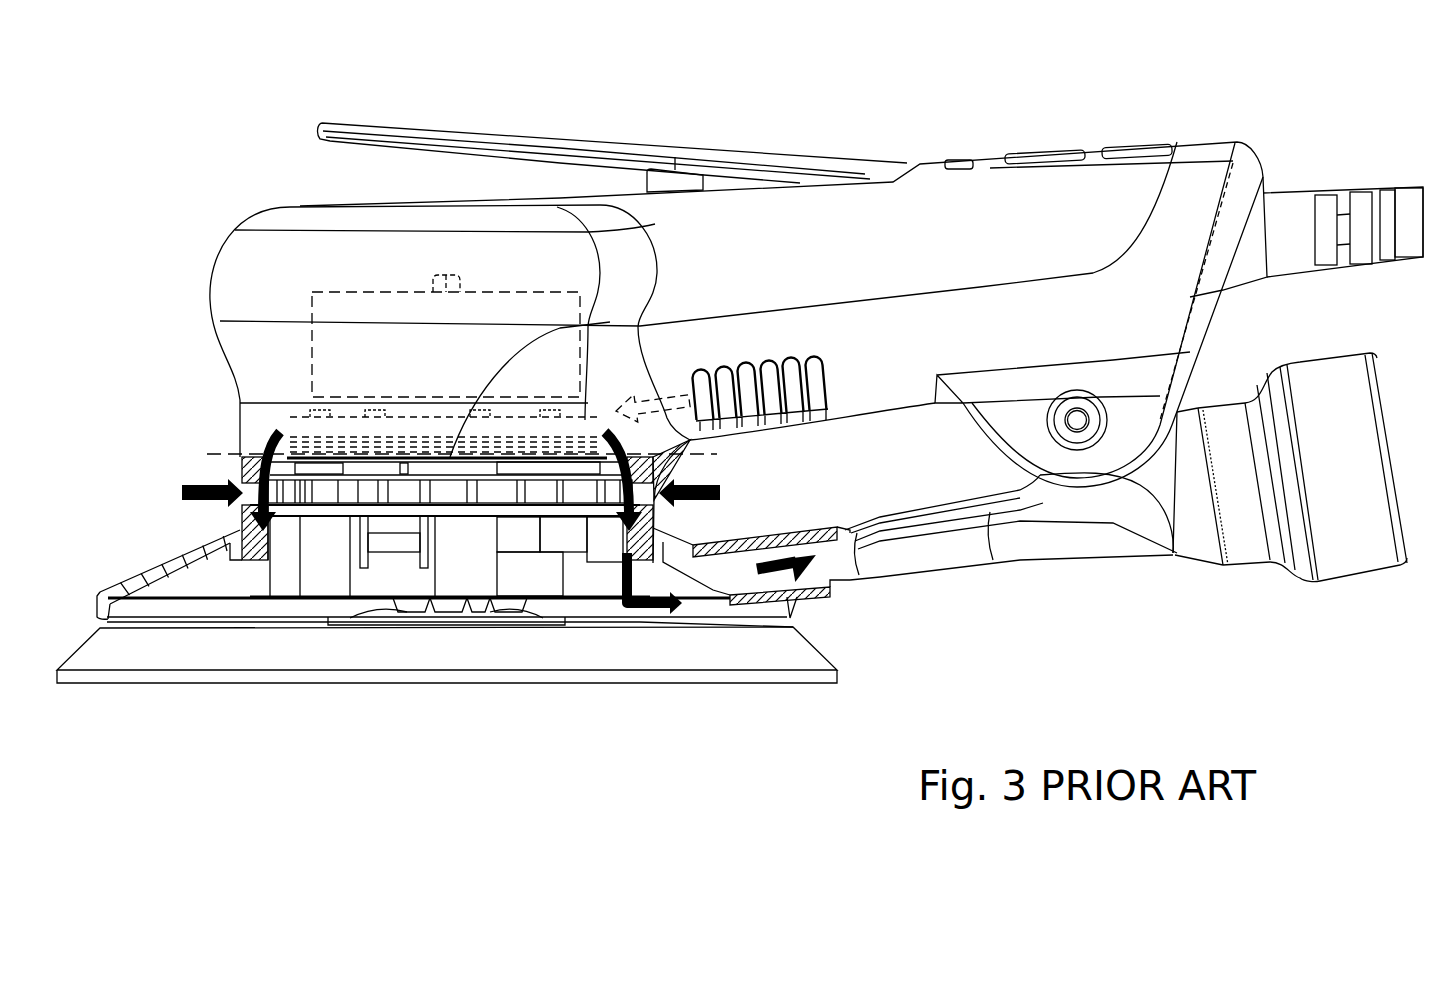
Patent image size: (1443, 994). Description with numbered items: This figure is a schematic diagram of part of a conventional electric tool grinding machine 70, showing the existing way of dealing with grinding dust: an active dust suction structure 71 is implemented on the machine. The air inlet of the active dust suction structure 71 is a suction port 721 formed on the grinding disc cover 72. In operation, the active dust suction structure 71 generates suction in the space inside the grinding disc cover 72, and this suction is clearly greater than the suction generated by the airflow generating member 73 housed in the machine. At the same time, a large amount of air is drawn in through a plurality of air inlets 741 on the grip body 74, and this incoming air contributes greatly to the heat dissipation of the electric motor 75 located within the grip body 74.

The electric tool grinding machine 70 is at (915, 69).
The active dust suction structure 71 is at (927, 557).
The grinding disc cover 72 is at (153, 565).
The suction port 721 is at (713, 584).
The airflow generating member 73 is at (490, 510).
The grip body 74 is at (246, 216).
The air inlets 741 is at (823, 400).
The electric motor 75 is at (513, 291).